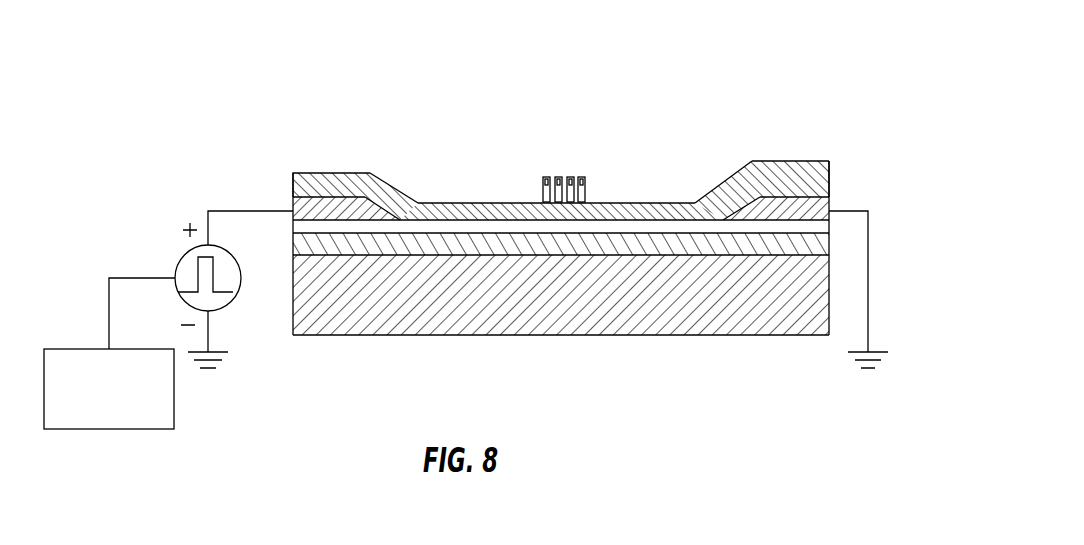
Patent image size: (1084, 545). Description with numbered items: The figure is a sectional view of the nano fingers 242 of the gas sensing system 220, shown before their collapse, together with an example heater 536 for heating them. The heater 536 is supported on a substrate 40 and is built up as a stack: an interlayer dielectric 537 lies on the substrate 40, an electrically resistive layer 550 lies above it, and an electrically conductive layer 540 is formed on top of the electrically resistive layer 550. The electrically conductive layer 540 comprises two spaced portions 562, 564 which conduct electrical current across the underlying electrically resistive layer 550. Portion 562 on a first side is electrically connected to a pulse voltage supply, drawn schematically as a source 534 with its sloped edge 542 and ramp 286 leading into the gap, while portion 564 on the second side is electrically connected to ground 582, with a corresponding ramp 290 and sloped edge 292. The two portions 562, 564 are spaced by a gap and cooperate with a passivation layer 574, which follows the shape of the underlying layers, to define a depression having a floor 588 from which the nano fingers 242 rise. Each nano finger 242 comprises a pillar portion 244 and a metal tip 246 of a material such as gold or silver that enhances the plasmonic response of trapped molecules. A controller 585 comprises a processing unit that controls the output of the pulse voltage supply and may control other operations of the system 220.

The system 220 is at (252, 97).
The portion of electrically conductive layer 562 is at (293, 195).
The first sloped electrode portion 542 is at (378, 199).
The first ramp 286 is at (412, 185).
The portion of electrically conductive layer 564 is at (833, 203).
The floor 588 is at (485, 202).
The pillar portion 244 is at (543, 193).
The metal tip 246 is at (559, 177).
The nano fingers 242 is at (583, 168).
The second ramp 290 is at (705, 193).
The second sloped electrode portion 292 is at (752, 195).
The heater 536 is at (862, 133).
The passivation layer 574 is at (833, 173).
The electrically conductive layer 540 is at (840, 198).
The electrically resistive layer 550 is at (833, 228).
The interlayer dielectric 537 is at (437, 256).
The substrate 40 is at (607, 335).
The pulse voltage source 534 is at (180, 253).
The controller 585 is at (174, 398).
The ground 582 is at (868, 260).